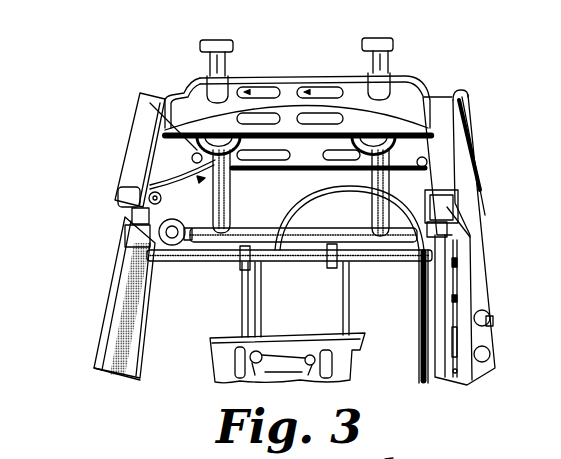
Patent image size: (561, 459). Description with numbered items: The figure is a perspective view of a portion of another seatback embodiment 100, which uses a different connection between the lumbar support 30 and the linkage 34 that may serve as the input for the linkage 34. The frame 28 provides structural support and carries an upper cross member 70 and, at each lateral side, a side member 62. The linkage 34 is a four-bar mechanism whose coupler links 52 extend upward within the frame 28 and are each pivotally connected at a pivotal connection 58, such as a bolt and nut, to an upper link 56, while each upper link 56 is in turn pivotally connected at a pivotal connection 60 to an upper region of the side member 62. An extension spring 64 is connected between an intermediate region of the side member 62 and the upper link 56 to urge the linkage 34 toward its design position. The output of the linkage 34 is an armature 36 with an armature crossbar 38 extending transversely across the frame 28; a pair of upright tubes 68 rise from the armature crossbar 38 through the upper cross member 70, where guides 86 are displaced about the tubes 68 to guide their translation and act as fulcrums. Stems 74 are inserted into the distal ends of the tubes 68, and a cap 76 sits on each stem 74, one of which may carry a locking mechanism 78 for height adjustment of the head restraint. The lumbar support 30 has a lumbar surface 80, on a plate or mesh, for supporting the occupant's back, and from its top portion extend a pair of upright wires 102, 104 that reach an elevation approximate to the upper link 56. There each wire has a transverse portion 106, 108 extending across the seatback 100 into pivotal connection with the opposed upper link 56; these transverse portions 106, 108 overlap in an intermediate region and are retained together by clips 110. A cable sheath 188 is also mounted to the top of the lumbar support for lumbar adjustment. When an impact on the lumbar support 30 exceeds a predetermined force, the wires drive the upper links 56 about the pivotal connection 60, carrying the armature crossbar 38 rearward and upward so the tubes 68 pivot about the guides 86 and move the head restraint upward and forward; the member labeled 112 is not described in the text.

The seatback embodiment 100 is at (478, 60).
The upper cross member 70 is at (165, 95).
The guides 86 is at (150, 97).
The cap 76 is at (362, 45).
The locking mechanism 78 is at (395, 47).
The stems 74 is at (393, 65).
The armature 36 is at (160, 127).
The upright tubes 68 is at (153, 167).
The pivotal connection 60 is at (147, 190).
The upper link 56 is at (137, 207).
The pivotal connection 58 is at (133, 243).
The side member 62 is at (93, 353).
The extension spring 64 is at (117, 313).
The linkage 34 is at (128, 297).
The coupler links 52 is at (127, 381).
The armature crossbar 38 is at (247, 215).
The transverse portion 108 is at (173, 258).
The clips 110 is at (322, 262).
The upright wire 102 is at (230, 300).
The upright wire 104 is at (365, 345).
The lumbar support 30 is at (206, 345).
The lumbar surface 80 is at (217, 355).
The transverse portion 106 is at (357, 267).
The cable sheath 188 is at (425, 192).
The frame 28 is at (478, 120).
The lower member 112 is at (393, 458).